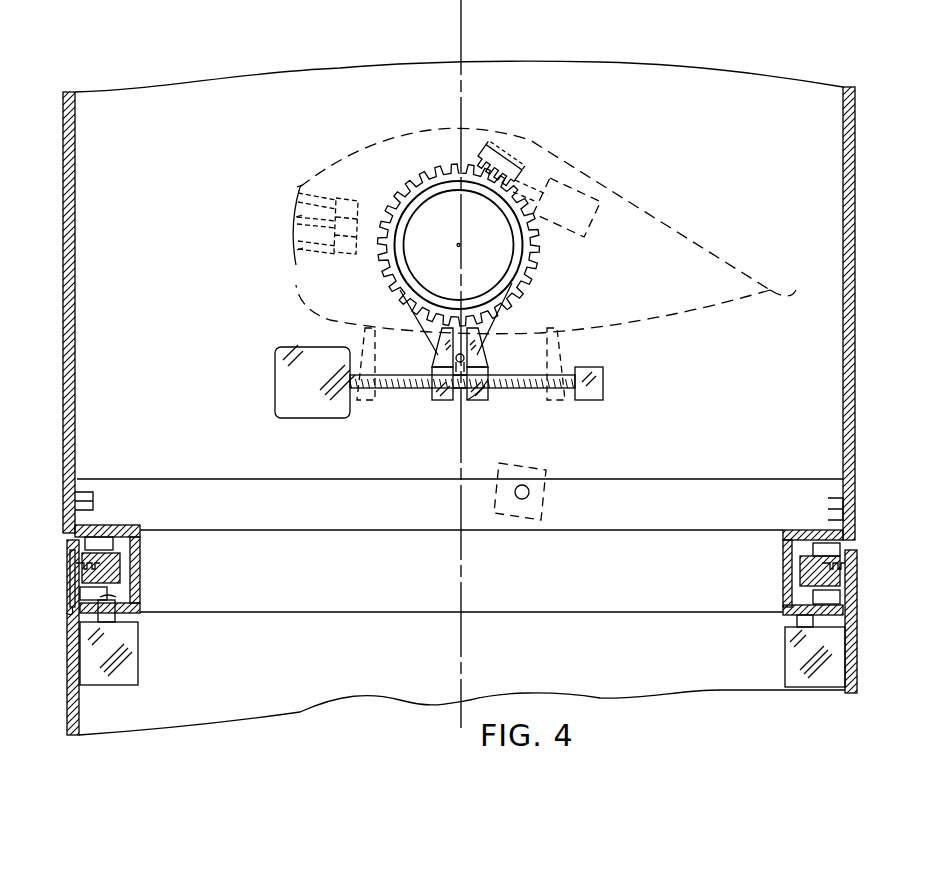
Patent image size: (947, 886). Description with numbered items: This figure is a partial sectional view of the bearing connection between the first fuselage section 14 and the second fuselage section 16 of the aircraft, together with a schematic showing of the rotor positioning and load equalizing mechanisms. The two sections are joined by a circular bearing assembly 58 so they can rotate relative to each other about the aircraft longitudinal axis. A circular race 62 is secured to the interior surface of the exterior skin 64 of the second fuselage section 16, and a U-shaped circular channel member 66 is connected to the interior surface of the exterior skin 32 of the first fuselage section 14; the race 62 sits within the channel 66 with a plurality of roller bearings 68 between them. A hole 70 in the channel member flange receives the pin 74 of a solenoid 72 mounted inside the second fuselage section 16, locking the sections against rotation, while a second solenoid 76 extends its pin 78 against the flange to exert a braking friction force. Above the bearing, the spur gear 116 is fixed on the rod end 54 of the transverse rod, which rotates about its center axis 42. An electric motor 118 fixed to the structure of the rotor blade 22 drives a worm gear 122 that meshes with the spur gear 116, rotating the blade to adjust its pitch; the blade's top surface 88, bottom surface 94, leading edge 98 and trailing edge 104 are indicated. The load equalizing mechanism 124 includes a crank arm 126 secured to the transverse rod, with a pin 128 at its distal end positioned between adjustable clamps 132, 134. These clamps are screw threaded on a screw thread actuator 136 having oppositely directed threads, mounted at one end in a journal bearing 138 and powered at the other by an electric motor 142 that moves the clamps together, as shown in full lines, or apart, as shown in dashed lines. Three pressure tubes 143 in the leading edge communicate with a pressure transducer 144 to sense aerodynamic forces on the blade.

The first fuselage section 14 is at (712, 92).
The second fuselage section 16 is at (669, 678).
The rotor blade 22 is at (650, 213).
The exterior skin 32 is at (63, 92).
The center axis 42 is at (457, 240).
The rod end 54 is at (522, 243).
The bearing assembly 58 is at (684, 466).
The circular race 62 is at (116, 560).
The exterior skin 64 is at (63, 597).
The circular channel member 66 is at (134, 527).
The roller bearings 68 is at (99, 540).
The hole 70 is at (110, 598).
The solenoid 72 is at (108, 658).
The pin 74 is at (108, 622).
The second solenoid 76 is at (800, 667).
The pin 78 is at (797, 622).
The top surface 88 is at (553, 178).
The bottom surface 94 is at (637, 322).
The leading edge 98 is at (285, 207).
The trailing edge 104 is at (772, 290).
The spur gear 116 is at (417, 180).
The electric motor 118 is at (572, 200).
The worm gear 122 is at (503, 143).
The load equalizing mechanism 124 is at (240, 362).
The crank arm 126 is at (490, 312).
The pin 128 is at (475, 396).
The adjustable clamp 132 is at (436, 401).
The adjustable clamp 134 is at (490, 392).
The screw thread actuator 136 is at (395, 390).
The journal bearing 138 is at (604, 384).
The electric motor 142 is at (308, 400).
The pressure tubes 143 is at (290, 187).
The pressure transducer 144 is at (340, 258).